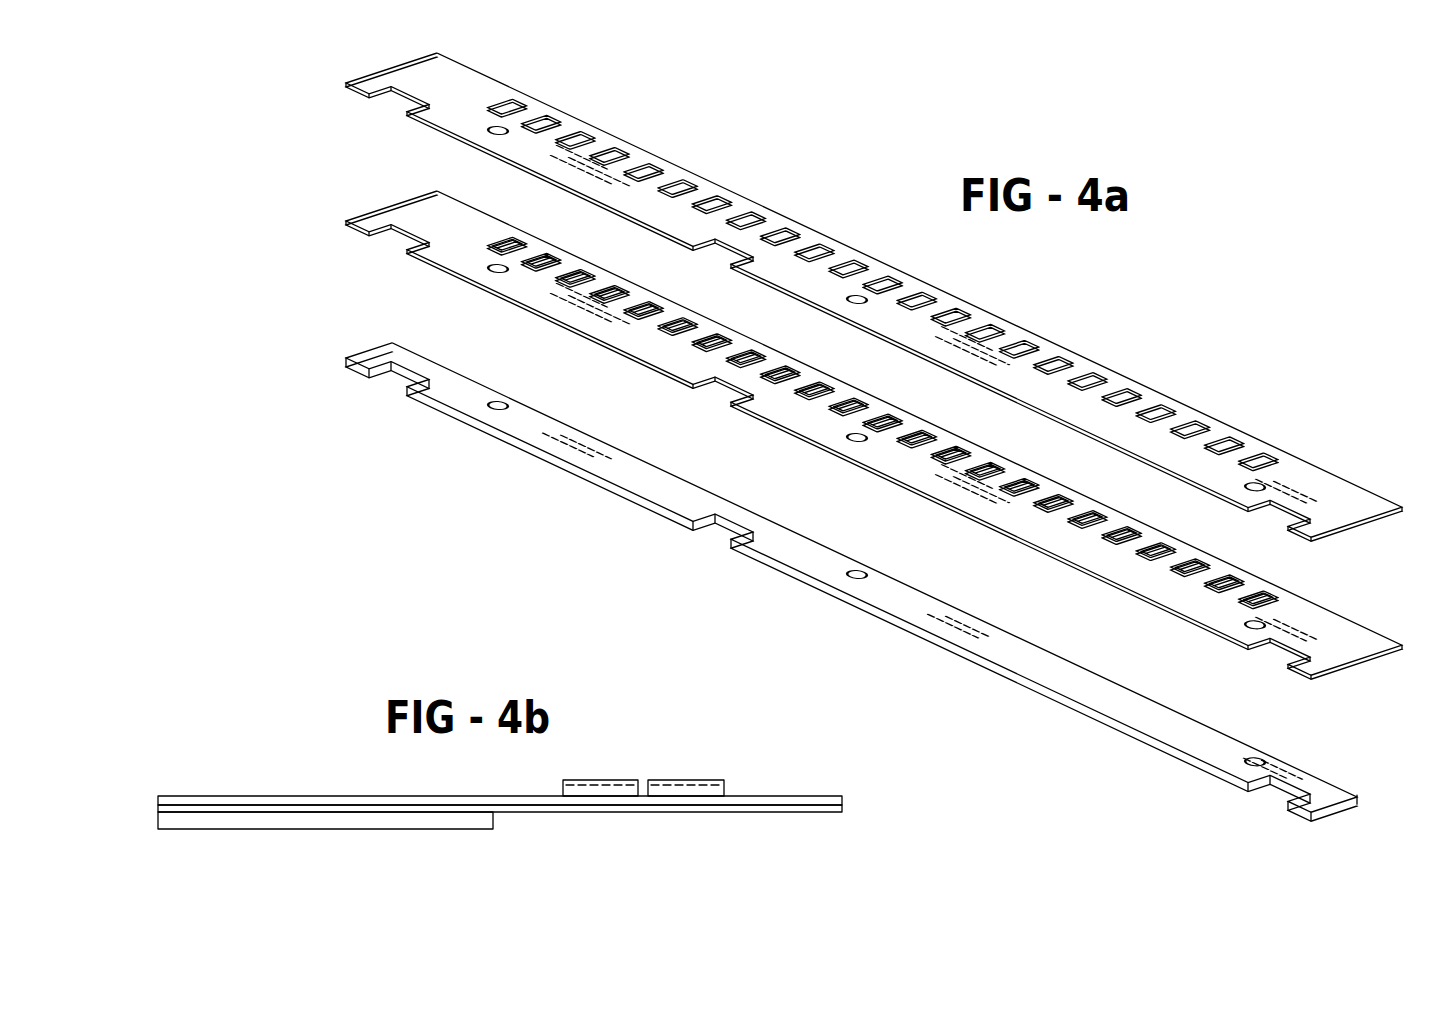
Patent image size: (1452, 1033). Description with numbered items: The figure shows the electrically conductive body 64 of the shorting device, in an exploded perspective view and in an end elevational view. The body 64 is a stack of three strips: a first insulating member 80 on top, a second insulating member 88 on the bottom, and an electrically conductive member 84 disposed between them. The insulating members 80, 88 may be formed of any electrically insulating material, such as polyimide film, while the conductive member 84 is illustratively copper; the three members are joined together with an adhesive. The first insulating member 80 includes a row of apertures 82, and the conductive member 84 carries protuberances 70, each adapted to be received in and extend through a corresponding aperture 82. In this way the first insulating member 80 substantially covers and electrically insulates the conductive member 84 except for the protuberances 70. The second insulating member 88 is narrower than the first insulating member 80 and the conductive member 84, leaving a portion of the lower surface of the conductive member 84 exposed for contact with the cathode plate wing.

In FIG. 4A, the electrically conductive body 64 is at (346, 36).
In FIG. 4B, the electrically conductive body 64 is at (863, 803).
In FIG. 4A, the protuberance 70 is at (1257, 592).
In FIG. 4B, the protuberance 70 is at (695, 780).
In FIG. 4A, the first insulating member 80 is at (886, 321).
In FIG. 4B, the first insulating member 80 is at (282, 795).
In FIG. 4A, the aperture 82 is at (1262, 456).
In FIG. 4A, the electrically conductive member 84 is at (881, 458).
In FIG. 4B, the electrically conductive member 84 is at (518, 813).
In FIG. 4A, the second insulating member 88 is at (1340, 804).
In FIG. 4B, the second insulating member 88 is at (277, 829).